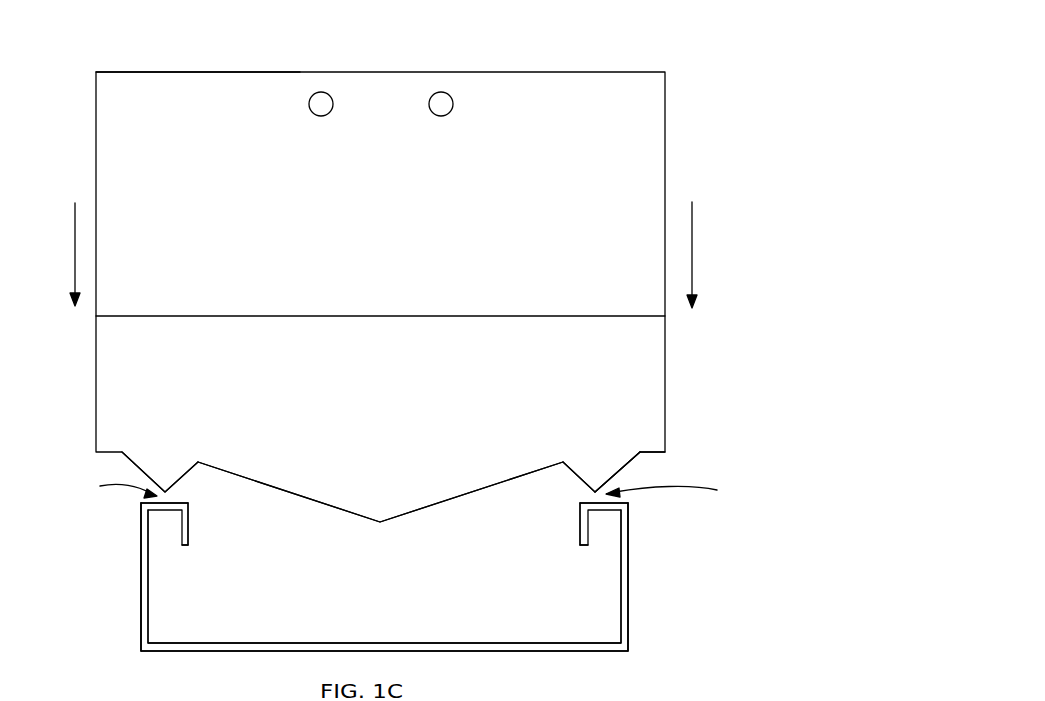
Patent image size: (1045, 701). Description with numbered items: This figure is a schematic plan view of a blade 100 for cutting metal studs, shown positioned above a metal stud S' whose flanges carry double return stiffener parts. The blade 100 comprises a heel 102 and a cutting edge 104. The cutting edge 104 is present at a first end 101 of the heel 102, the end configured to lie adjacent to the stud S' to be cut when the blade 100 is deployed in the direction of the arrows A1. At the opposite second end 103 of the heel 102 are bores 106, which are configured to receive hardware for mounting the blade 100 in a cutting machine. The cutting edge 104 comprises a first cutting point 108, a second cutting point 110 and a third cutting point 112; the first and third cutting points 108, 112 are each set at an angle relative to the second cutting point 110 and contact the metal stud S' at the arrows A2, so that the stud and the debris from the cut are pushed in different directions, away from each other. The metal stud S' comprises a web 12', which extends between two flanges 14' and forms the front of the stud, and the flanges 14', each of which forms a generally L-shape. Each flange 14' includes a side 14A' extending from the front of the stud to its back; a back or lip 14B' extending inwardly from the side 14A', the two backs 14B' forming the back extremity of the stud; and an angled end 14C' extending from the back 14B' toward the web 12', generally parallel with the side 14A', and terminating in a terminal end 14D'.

The blade 100 is at (700, 130).
The first end 101 is at (716, 472).
The heel 102 is at (380, 240).
The second end 103 is at (77, 72).
The cutting edge 104 is at (633, 461).
The bores 106 is at (437, 92).
The first cutting point 108 is at (167, 489).
The second cutting point 110 is at (381, 520).
The third cutting point 112 is at (598, 489).
The arrows indicating blade deployment direction A1 is at (385, 255).
The arrows indicating stud contact locations A2 is at (408, 490).
The web 12' is at (384, 594).
The flanges 14' is at (386, 579).
The side 14A' is at (391, 577).
The back or lip 14B' is at (418, 506).
The angled end 14C' is at (384, 524).
The terminal end 14D' is at (390, 565).
The metal stud S' is at (408, 576).